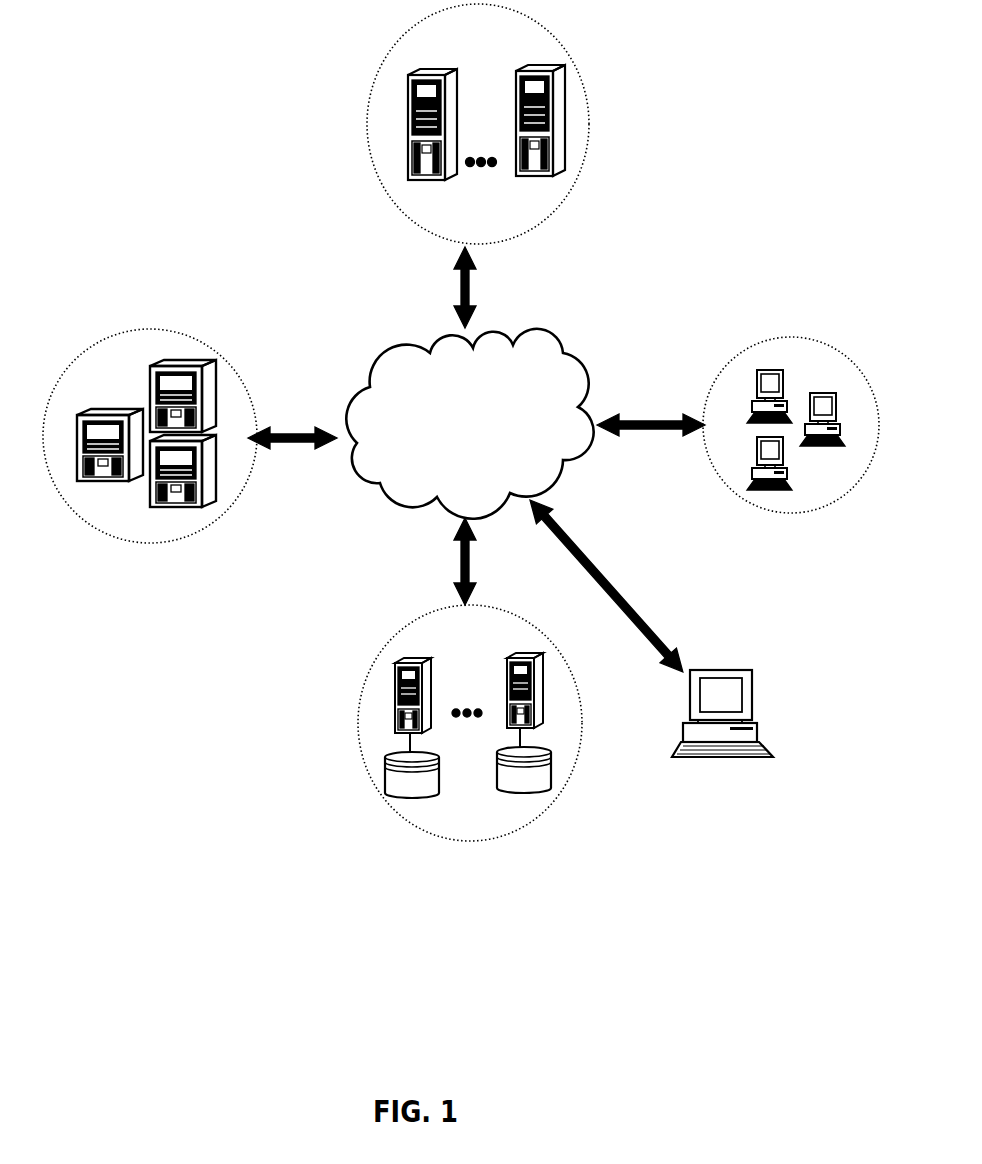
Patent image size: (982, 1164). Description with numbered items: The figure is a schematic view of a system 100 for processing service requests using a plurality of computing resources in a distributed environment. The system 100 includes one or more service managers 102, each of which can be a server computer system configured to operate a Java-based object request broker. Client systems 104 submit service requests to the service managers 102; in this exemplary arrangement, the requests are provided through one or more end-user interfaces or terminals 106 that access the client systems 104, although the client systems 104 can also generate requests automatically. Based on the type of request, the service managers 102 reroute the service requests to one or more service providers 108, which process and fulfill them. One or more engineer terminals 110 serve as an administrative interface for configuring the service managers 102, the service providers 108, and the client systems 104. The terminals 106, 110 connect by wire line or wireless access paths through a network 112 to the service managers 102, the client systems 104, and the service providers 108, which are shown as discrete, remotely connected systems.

The system 100 is at (597, 896).
The service managers 102 is at (212, 345).
The client systems 104 is at (367, 138).
The end-user interfaces or terminals 106 is at (750, 497).
The service providers 108 is at (362, 762).
The engineer terminals 110 is at (747, 757).
The network 112 is at (560, 337).